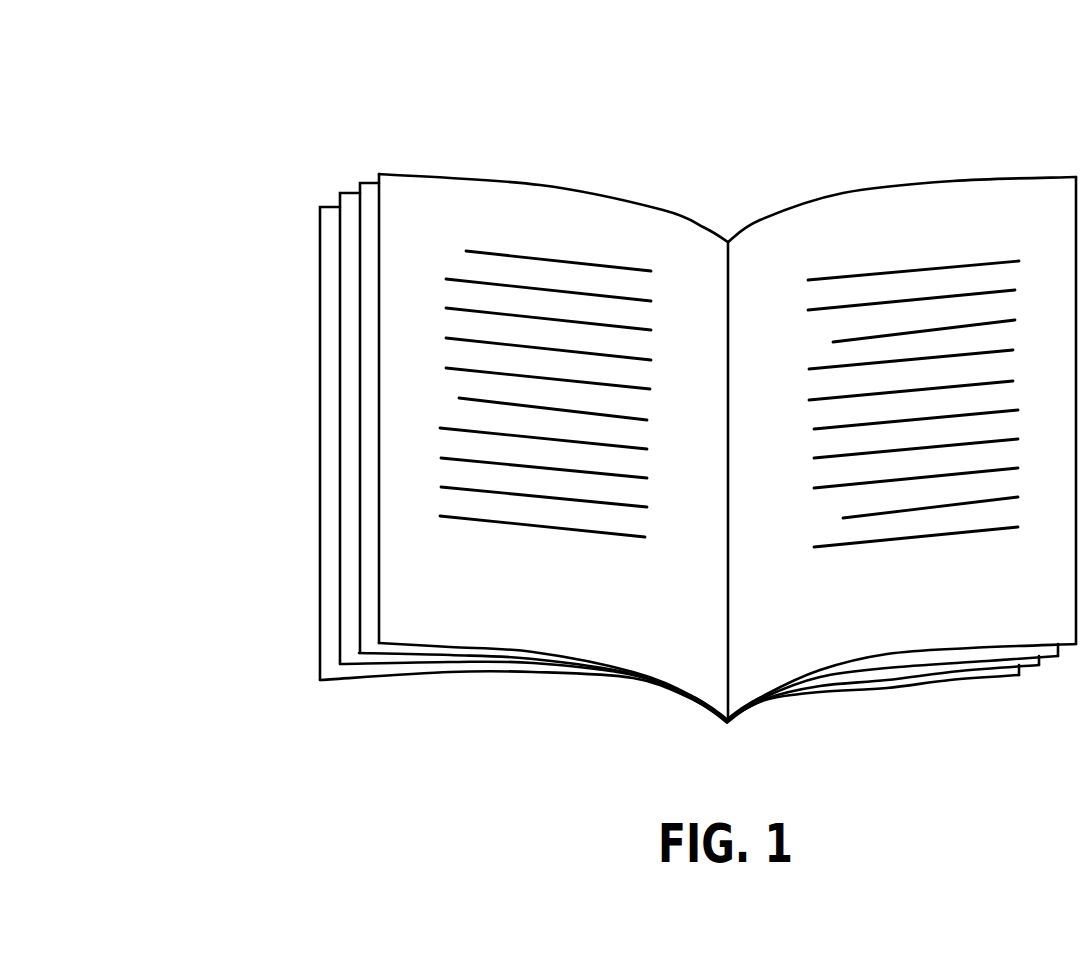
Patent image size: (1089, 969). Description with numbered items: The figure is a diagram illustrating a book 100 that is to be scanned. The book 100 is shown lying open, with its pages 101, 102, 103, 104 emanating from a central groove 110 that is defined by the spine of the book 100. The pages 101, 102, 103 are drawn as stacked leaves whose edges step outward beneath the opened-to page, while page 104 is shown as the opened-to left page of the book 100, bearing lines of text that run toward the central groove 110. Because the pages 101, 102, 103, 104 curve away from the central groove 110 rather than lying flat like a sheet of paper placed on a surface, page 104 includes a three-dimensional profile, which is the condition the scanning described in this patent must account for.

The book 100 is at (199, 50).
The page 101 is at (320, 207).
The page 102 is at (341, 193).
The page 103 is at (374, 183).
The page 104 is at (433, 173).
The central groove 110 is at (728, 229).